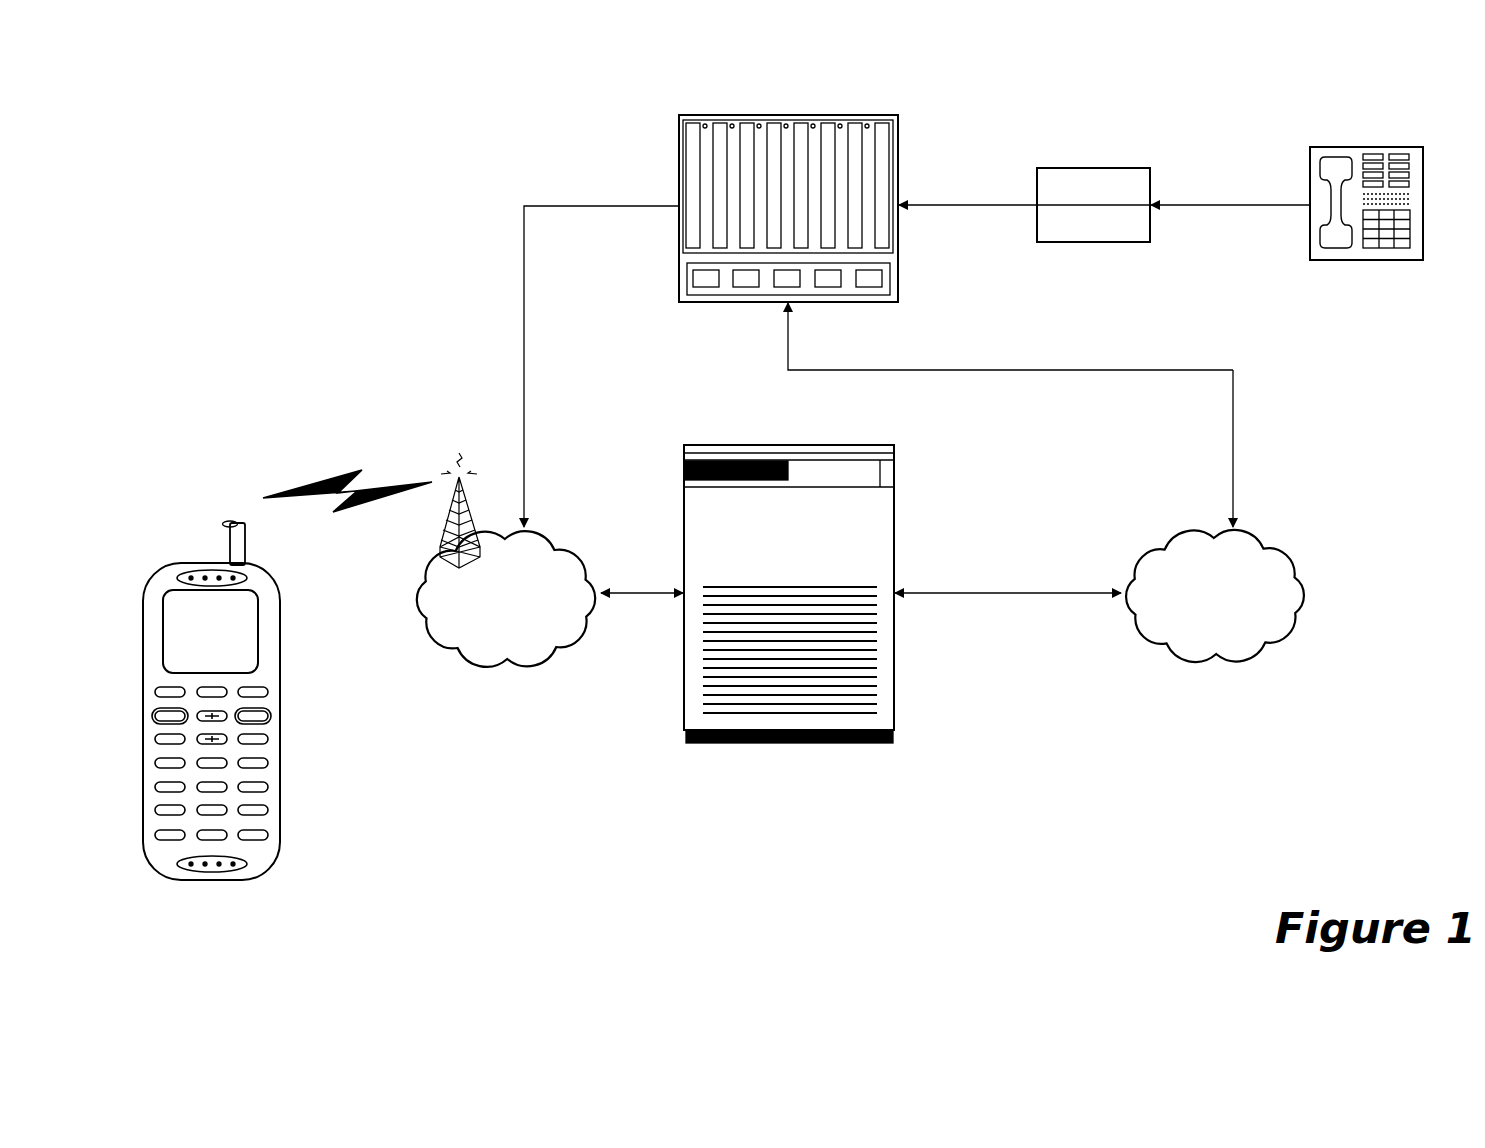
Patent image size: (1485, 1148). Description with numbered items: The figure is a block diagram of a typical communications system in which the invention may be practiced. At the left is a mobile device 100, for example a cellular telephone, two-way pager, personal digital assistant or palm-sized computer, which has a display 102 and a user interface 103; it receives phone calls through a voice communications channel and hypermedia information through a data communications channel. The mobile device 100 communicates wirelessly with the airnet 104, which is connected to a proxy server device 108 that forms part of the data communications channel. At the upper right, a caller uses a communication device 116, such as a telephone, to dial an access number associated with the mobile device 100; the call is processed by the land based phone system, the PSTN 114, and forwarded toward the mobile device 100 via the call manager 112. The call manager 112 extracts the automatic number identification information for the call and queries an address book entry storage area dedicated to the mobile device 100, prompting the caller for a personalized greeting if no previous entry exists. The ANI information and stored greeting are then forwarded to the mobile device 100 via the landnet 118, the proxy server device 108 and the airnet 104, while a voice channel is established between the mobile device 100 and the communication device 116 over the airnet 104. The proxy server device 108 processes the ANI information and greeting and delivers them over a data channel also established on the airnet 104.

The mobile device 100 is at (270, 578).
The display 102 is at (258, 633).
The user interface 103 is at (264, 676).
The airnet 104 is at (578, 531).
The proxy server device 108 is at (894, 541).
The call manager 112 is at (898, 151).
The Public Switched Telephone Network (PSTN) 114 is at (1092, 168).
The communication device 116 is at (1423, 190).
The landnet 118 is at (1280, 531).